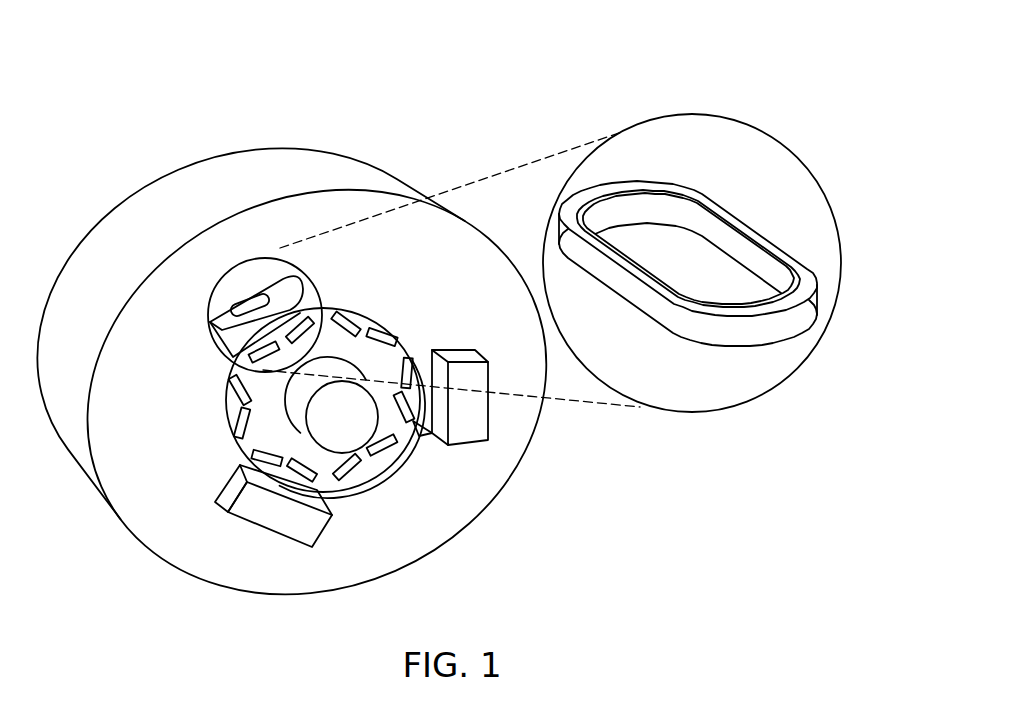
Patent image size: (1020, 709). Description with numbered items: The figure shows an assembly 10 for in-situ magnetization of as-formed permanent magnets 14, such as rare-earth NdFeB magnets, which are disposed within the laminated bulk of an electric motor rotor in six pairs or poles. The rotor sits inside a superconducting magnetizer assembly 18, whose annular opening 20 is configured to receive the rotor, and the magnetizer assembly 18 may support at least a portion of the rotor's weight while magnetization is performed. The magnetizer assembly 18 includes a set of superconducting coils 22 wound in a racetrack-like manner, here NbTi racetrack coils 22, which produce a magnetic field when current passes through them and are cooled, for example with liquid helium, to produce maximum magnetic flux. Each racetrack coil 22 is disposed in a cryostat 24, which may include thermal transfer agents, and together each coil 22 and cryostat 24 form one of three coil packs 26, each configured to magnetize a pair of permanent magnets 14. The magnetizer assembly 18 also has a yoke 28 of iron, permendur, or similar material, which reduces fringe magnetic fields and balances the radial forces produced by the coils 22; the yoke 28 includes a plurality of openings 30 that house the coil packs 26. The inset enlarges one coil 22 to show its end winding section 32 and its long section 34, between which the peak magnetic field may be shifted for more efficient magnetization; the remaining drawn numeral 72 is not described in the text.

The assembly 10 is at (205, 62).
The permanent magnets 14 is at (233, 375).
The superconducting magnetizer assembly 18 is at (135, 540).
The annular opening 20 is at (373, 480).
The racetrack coils 22 is at (227, 320).
The cryostat 24 is at (292, 523).
The coil packs 26 is at (490, 420).
The yoke 28 is at (135, 223).
The openings 30 is at (248, 300).
The end winding section 32 is at (625, 205).
The long section 34 is at (735, 247).
The slots 72 is at (225, 417).